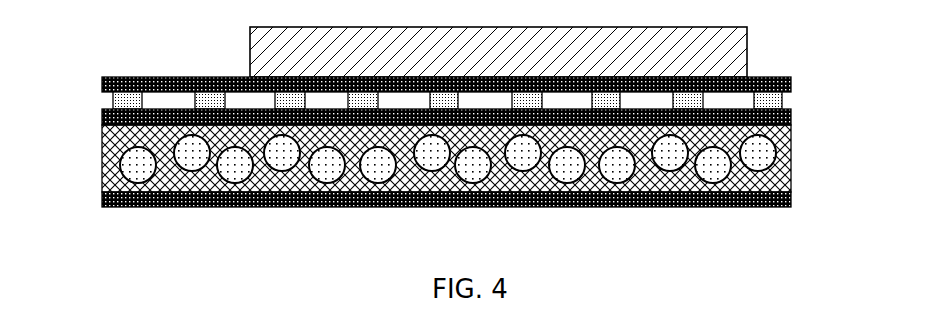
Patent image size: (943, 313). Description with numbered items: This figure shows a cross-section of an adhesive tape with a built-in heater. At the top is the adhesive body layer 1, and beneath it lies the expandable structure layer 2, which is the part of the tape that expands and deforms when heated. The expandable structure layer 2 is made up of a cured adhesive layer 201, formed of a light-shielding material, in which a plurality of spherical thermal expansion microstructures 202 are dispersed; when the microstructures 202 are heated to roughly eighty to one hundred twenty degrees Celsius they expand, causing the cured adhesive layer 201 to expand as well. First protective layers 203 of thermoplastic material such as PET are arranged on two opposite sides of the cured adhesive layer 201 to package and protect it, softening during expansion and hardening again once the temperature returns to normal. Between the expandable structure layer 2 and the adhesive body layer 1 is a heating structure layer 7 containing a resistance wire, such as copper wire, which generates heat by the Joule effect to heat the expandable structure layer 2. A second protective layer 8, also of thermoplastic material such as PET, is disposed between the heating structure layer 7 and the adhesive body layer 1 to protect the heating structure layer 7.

The adhesive body layer 1 is at (750, 50).
The second protective layer 8 is at (123, 83).
The heating structure layer 7 is at (105, 101).
The expandable structure layer 2 is at (520, 161).
The first protective layer 203 is at (803, 117).
The cured adhesive layer 201 is at (803, 146).
The thermal expansion microstructure 202 is at (769, 162).